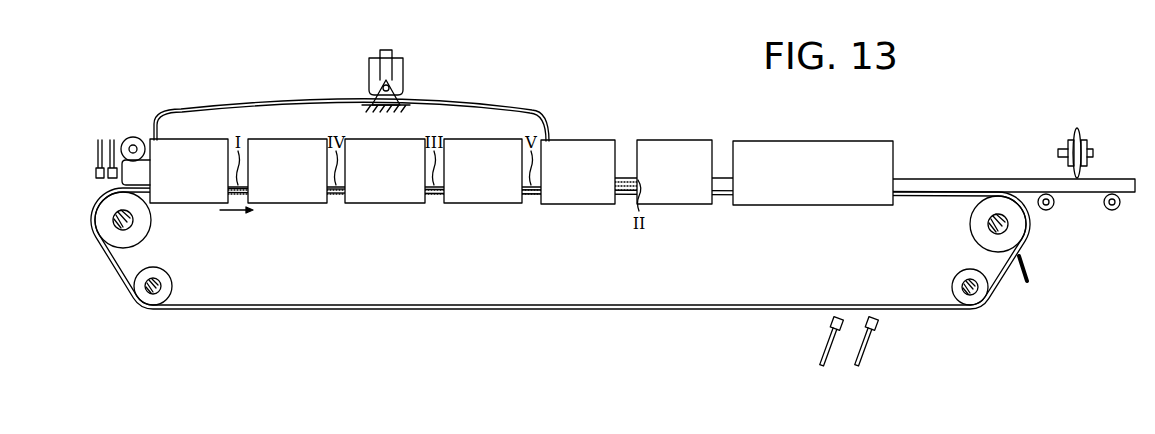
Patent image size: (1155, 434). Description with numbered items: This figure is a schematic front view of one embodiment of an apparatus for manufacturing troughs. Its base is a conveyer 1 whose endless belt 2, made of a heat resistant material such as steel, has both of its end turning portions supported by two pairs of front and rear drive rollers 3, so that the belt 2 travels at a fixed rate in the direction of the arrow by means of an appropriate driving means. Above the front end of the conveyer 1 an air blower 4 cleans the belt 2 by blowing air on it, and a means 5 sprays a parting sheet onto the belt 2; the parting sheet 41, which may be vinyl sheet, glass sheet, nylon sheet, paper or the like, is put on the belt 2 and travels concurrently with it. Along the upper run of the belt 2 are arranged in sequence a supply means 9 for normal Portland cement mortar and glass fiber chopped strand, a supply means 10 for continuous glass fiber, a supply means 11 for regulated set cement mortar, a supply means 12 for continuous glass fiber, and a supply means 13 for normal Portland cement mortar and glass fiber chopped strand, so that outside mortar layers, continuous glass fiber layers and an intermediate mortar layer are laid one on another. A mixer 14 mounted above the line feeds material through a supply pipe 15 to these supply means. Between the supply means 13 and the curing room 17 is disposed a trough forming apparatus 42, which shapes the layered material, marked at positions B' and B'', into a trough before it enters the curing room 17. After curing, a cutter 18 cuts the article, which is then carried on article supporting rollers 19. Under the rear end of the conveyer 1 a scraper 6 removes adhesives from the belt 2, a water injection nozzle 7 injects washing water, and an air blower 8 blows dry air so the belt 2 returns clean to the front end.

The conveyer 1 is at (405, 320).
The endless belt 2 is at (585, 312).
The drive rollers 3 is at (107, 227).
The air blower 4 is at (95, 172).
The means for spraying a parting sheet 5 is at (124, 144).
The scraper 6 is at (1024, 282).
The water injection nozzle 7 is at (880, 327).
The air blower 8 is at (830, 326).
The supply means for normal Portland cement mortar and glass fiber chopped strand 9 is at (180, 185).
The supply means for continuous glass fiber 10 is at (272, 185).
The supply means for regulated set cement mortar 11 is at (370, 185).
The supply means for continuous glass fiber 12 is at (467, 185).
The supply means for normal Portland cement mortar and glass fiber chopped strand 13 is at (562, 185).
The mixer 14 is at (369, 73).
The supply pipe 15 is at (247, 101).
The curing room 17 is at (796, 185).
The cutter 18 is at (1073, 136).
The article supporting rollers 19 is at (1046, 211).
The parting sheet 41 is at (138, 136).
The trough forming apparatus 42 is at (657, 185).
The web position B' is at (624, 131).
The web position B'' is at (969, 153).